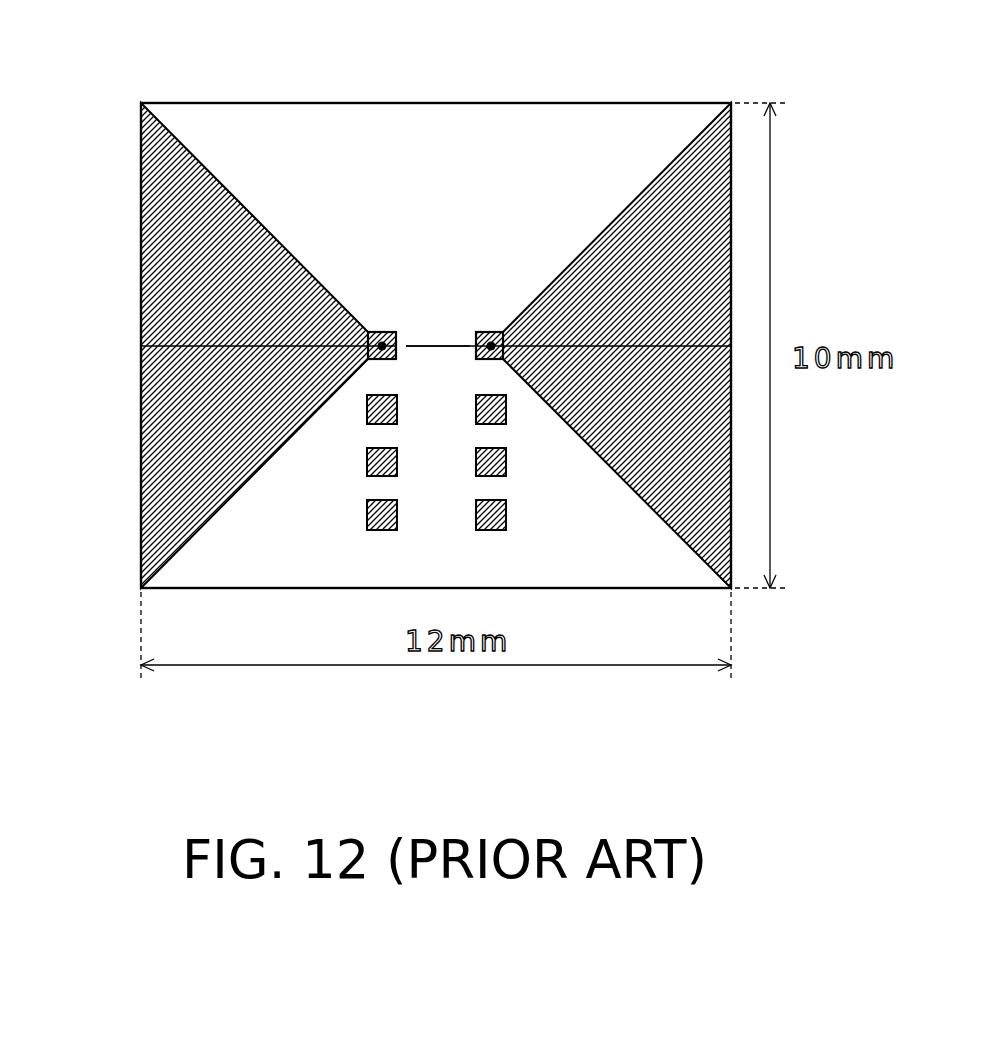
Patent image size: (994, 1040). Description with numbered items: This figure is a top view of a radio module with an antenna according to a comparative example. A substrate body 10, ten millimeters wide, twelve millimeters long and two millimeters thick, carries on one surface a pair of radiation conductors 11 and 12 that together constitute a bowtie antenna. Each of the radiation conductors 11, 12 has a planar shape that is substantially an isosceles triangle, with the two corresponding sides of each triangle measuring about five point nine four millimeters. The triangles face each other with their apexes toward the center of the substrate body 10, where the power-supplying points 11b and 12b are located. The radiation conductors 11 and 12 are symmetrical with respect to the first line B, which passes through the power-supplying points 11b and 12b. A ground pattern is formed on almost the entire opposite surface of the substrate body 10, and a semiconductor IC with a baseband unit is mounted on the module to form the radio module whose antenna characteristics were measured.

The substrate body 10 is at (392, 103).
The radiation conductor 11 is at (673, 197).
The radiation conductor 12 is at (178, 442).
The power-supplying point 11b is at (498, 332).
The power-supplying point 12b is at (385, 332).
The first line B is at (431, 341).